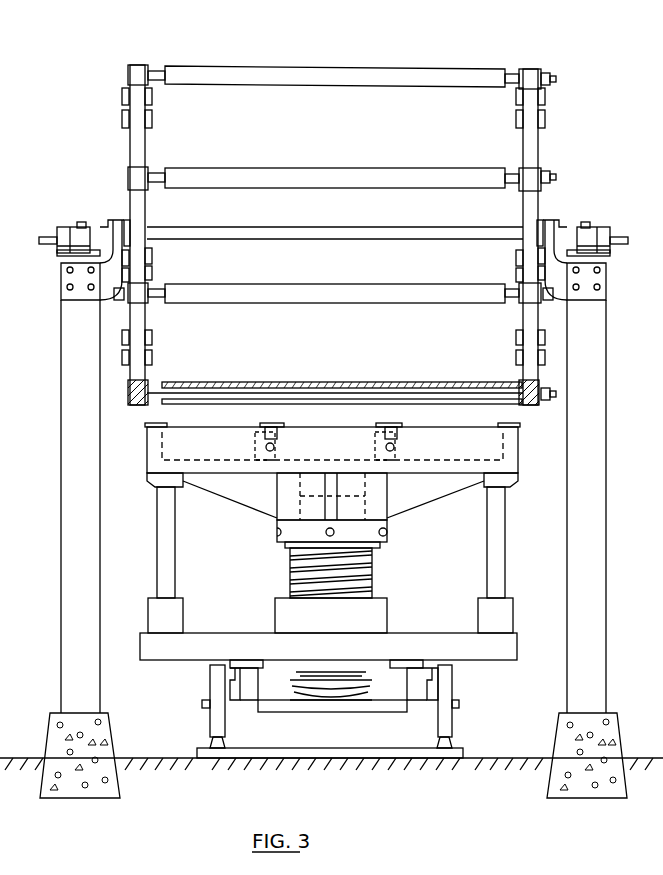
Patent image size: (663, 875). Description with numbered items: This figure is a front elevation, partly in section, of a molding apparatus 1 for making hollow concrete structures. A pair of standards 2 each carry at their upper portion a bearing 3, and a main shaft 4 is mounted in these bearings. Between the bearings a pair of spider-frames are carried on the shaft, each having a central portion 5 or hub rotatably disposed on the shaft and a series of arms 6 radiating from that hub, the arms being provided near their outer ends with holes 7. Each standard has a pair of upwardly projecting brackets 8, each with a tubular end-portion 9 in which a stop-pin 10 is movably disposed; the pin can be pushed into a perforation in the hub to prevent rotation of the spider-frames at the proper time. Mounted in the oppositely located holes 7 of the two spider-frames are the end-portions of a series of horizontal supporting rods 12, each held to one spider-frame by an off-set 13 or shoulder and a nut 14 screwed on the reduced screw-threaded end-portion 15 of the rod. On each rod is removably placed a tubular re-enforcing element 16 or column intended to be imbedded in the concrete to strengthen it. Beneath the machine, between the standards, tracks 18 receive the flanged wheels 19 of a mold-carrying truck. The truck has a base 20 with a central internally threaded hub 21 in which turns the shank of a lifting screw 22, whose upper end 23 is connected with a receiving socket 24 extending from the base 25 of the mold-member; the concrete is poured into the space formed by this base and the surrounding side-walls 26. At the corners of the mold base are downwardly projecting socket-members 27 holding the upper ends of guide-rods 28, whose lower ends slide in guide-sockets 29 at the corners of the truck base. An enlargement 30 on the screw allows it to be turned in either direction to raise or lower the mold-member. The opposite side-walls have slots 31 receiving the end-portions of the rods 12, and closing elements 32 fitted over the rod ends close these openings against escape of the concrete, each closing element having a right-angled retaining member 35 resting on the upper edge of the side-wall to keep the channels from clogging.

The molding apparatus 1 is at (335, 299).
The standards 2 is at (61, 426).
The bearing 3 is at (65, 229).
The main shaft 4 is at (39, 239).
The central portion 5 is at (110, 221).
The arms 6 is at (139, 145).
The holes 7 is at (122, 113).
The brackets 8 is at (63, 274).
The tubular end-portion 9 is at (128, 226).
The stop-pin 10 is at (81, 222).
The horizontal supporting rods 12 is at (153, 70).
The off-set 13 is at (521, 386).
The nut 14 is at (546, 73).
The screw-threaded end-portion 15 is at (557, 78).
The tubular re-enforcing element 16 is at (291, 87).
The tracks 18 is at (222, 748).
The flanged wheels 19 is at (210, 722).
The base 20 is at (428, 640).
The hub 21 is at (378, 612).
The lifting screw 22 is at (372, 566).
The upper end 23 is at (355, 507).
The receiving socket 24 is at (280, 522).
The base 25 is at (226, 476).
The side-walls 26 is at (147, 446).
The socket-members 27 is at (152, 483).
The guide-rods 28 is at (160, 546).
The guide-sockets 29 is at (178, 612).
The enlargement 30 is at (372, 545).
The slots 31 is at (278, 433).
The closing elements 32 is at (266, 447).
The retaining member 35 is at (150, 423).